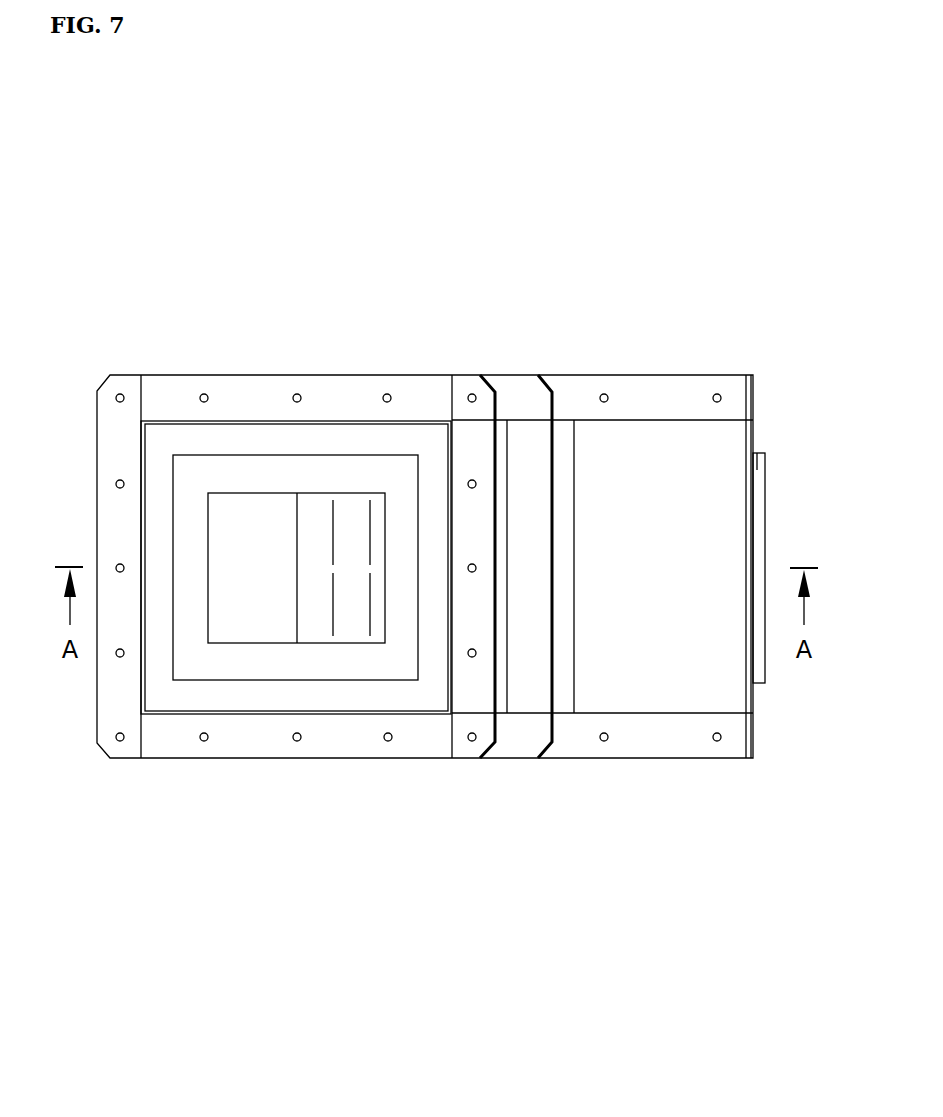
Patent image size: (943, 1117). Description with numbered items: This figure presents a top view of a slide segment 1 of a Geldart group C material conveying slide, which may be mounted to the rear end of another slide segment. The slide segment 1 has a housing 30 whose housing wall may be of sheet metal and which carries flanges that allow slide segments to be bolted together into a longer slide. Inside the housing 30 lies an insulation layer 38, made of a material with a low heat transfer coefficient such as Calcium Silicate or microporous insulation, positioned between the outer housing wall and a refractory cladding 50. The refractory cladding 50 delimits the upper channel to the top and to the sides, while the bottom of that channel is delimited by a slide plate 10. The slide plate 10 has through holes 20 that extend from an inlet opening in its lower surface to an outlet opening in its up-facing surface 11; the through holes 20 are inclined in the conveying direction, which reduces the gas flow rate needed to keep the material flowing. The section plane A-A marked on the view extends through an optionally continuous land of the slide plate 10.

The slide segment 1 is at (547, 185).
The slide plate 10 is at (317, 540).
The up-facing surface 11 is at (761, 476).
The through holes 20 is at (330, 610).
The housing 30 is at (423, 418).
The insulation layer 38 is at (383, 697).
The refractory cladding 50 is at (338, 668).